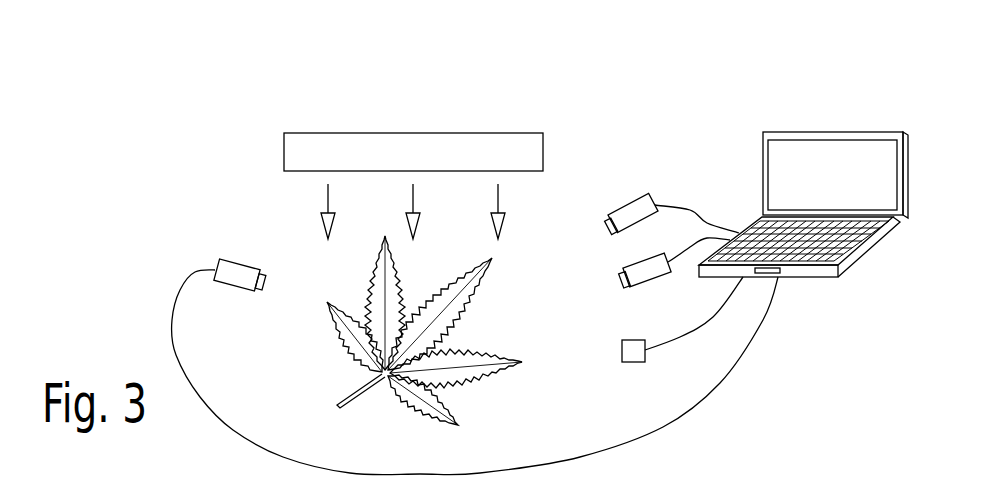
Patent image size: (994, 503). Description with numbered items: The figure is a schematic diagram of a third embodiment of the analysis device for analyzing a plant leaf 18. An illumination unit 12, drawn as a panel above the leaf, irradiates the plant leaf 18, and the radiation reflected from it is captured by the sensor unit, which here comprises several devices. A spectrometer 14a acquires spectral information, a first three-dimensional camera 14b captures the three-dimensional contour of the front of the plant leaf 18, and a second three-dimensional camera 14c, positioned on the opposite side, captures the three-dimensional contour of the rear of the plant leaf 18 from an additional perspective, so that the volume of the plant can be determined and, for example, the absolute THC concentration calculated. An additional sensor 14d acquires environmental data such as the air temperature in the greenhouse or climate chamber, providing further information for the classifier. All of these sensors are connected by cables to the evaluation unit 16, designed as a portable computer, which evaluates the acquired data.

The illumination unit 12 is at (555, 108).
The spectrometer 14a is at (653, 190).
The first 3D camera 14b is at (647, 272).
The second 3D camera 14c is at (228, 262).
The additional sensor 14d is at (622, 352).
The evaluation unit 16 is at (828, 102).
The plant leaf 18 is at (326, 367).